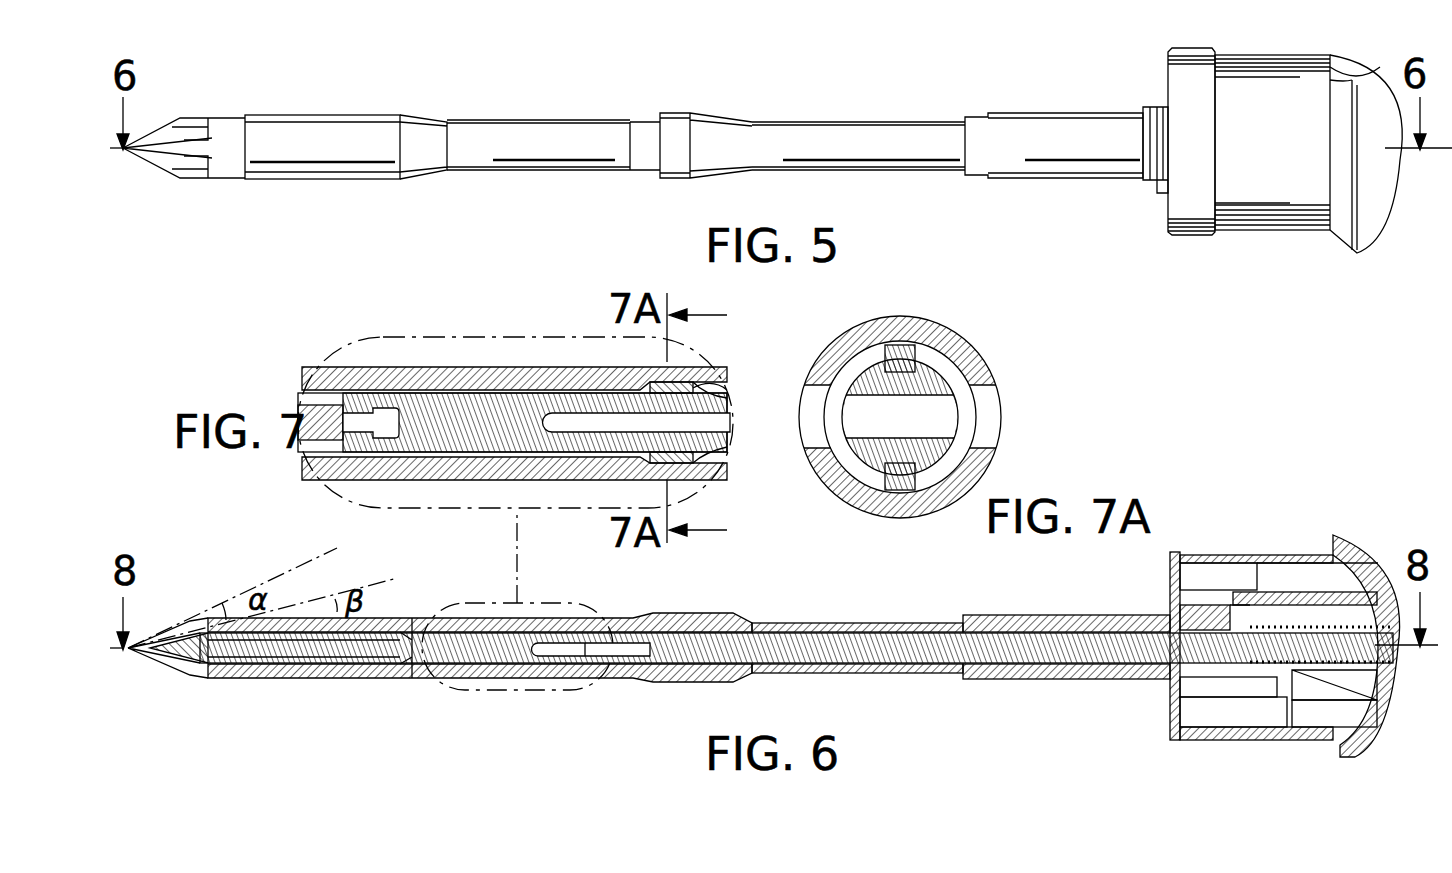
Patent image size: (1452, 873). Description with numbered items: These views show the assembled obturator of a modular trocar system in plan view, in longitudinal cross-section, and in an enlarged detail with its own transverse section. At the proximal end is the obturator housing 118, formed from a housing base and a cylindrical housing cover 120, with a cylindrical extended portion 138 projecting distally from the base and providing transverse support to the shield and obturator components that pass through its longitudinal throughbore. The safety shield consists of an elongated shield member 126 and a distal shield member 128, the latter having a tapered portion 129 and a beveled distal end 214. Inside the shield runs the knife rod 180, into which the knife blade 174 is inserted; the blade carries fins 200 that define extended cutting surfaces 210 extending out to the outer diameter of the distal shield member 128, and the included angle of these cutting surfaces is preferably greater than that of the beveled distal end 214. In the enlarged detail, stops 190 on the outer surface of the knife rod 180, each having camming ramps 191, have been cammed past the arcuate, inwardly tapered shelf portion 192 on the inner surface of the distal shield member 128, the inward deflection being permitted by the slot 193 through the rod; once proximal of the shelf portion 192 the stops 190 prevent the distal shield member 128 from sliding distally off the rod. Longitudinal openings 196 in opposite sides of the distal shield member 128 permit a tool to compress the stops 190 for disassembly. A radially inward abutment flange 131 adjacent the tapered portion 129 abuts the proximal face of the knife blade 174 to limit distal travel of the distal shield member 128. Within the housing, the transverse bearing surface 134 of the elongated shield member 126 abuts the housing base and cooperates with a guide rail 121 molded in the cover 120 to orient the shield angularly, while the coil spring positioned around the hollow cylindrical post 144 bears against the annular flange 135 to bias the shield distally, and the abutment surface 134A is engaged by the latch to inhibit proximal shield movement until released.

In FIG. 5, the fins 200 is at (197, 122).
In FIG. 5, the tapered portion 129 is at (422, 135).
In FIG. 5, the distal shield member 128 is at (498, 135).
In FIG. 7, the distal shield member 128 is at (323, 470).
In FIG. 7A, the distal shield member 128 is at (893, 322).
In FIG. 6, the distal shield member 128 is at (328, 680).
In FIG. 5, the elongated shield member 126 is at (827, 137).
In FIG. 6, the elongated shield member 126 is at (793, 623).
In FIG. 5, the cylindrical extended portion 138 is at (1035, 130).
In FIG. 6, the cylindrical extended portion 138 is at (992, 679).
In FIG. 5, the cylindrical housing cover 120 is at (1290, 150).
In FIG. 6, the cylindrical housing cover 120 is at (1247, 555).
In FIG. 7, the knife blade 174 is at (317, 413).
In FIG. 7, the slot 193 is at (542, 413).
In FIG. 7A, the slot 193 is at (873, 397).
In FIG. 7, the shelf portion 192 is at (608, 380).
In FIG. 7A, the shelf portion 192 is at (860, 473).
In FIG. 7, the camming ramps 191 is at (693, 388).
In FIG. 7, the stops 190 is at (680, 392).
In FIG. 7A, the stops 190 is at (915, 353).
In FIG. 7, the knife rod 180 is at (482, 423).
In FIG. 7A, the knife rod 180 is at (880, 380).
In FIG. 6, the knife rod 180 is at (837, 653).
In FIG. 7A, the longitudinal openings 196 is at (990, 407).
In FIG. 6, the extended cutting surfaces 210 is at (143, 642).
In FIG. 6, the beveled distal end 214 is at (242, 680).
In FIG. 6, the abutment flange 131 is at (383, 683).
In FIG. 6, the obturator housing 118 is at (1168, 570).
In FIG. 6, the abutment surface 134A is at (1267, 610).
In FIG. 6, the guide rail 121 is at (1172, 717).
In FIG. 6, the hollow cylindrical post 144 is at (1193, 692).
In FIG. 6, the transverse bearing surface 134 is at (1300, 697).
In FIG. 6, the annular flange 135 is at (1333, 673).